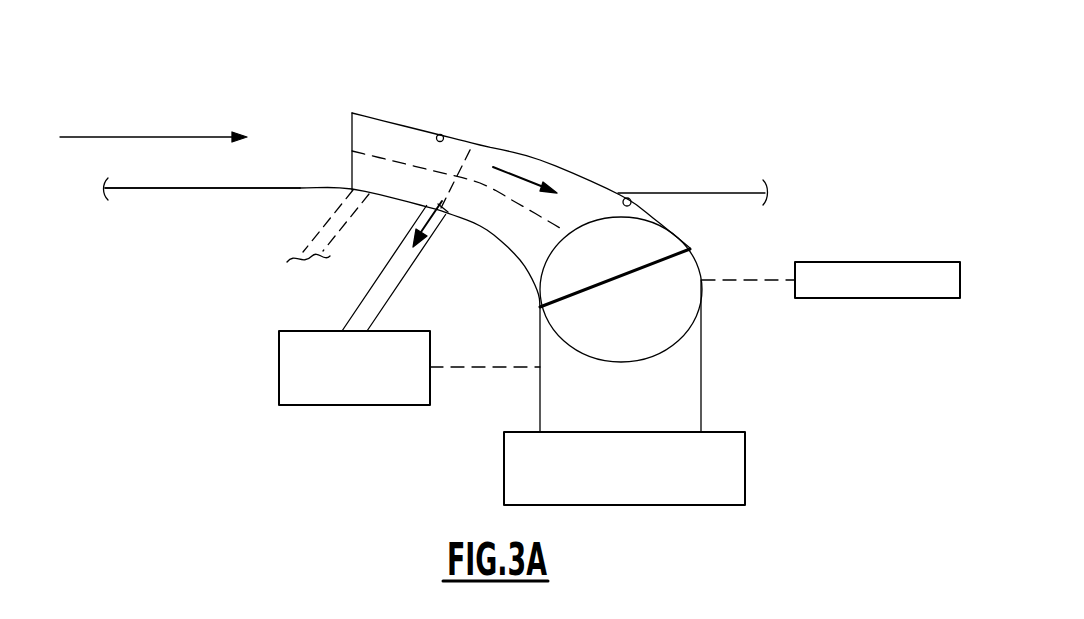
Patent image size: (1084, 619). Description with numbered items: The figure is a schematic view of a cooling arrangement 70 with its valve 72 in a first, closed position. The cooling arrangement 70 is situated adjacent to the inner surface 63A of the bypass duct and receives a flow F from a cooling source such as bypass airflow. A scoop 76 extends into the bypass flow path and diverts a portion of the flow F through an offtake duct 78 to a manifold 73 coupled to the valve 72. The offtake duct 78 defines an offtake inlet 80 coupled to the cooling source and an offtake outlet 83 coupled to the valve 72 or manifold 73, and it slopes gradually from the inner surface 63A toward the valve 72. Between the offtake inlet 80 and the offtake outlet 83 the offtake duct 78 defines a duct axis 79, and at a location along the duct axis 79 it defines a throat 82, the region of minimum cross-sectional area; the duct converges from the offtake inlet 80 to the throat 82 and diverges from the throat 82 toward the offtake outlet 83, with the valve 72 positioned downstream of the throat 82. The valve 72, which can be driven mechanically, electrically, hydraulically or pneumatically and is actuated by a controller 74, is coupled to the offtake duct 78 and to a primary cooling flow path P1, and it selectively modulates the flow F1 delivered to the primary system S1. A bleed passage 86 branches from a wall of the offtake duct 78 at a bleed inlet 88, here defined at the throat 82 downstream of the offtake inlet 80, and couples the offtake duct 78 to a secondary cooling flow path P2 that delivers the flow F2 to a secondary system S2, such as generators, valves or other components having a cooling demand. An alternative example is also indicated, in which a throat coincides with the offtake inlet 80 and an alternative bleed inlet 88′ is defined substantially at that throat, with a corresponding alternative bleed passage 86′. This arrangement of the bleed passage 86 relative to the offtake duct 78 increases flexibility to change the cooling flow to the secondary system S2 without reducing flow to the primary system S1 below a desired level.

The cooling arrangement 70 is at (102, 54).
The inner surface of bypass duct 63A is at (165, 187).
The valve 72 is at (684, 245).
The manifold 73 is at (655, 217).
The controller 74 is at (855, 262).
The scoop 76 is at (397, 126).
The offtake duct 78 is at (443, 134).
The duct axis 79 is at (556, 228).
The offtake inlet 80 is at (350, 175).
The throat 82 is at (472, 150).
The offtake outlet 83 is at (631, 200).
The bleed passage 86 is at (407, 276).
The alternative secondary duct 86′ is at (312, 238).
The bleed inlet 88 is at (444, 210).
The bleed inlet 88′ is at (361, 191).
The flow F is at (142, 137).
The flow to primary system F1 is at (540, 184).
The flow to secondary system F2 is at (438, 232).
The primary cooling flow path P1 is at (704, 371).
The secondary cooling flow path P2 is at (385, 303).
The primary system S1 is at (745, 468).
The secondary system S2 is at (279, 352).